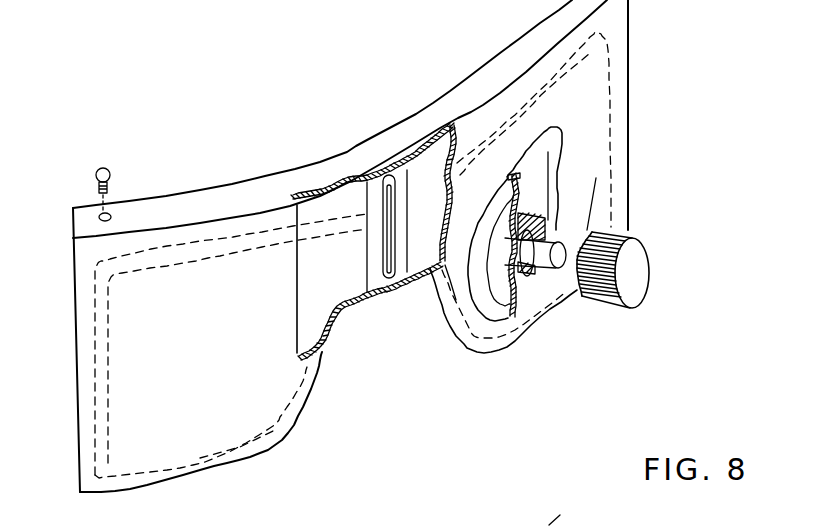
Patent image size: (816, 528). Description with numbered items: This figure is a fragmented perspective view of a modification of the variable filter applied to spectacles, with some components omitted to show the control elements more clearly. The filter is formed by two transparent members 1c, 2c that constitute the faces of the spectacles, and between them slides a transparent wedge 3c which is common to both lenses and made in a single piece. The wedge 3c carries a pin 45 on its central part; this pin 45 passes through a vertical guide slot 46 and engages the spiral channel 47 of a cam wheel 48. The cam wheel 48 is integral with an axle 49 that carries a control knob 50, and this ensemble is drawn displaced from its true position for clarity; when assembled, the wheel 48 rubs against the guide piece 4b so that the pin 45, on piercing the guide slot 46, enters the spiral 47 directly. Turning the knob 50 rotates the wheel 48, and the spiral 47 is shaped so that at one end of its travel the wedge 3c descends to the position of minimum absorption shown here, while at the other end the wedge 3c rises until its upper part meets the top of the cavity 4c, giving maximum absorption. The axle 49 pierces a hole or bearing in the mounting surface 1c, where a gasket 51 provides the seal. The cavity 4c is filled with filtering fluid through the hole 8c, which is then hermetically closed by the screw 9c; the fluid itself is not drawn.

The transparent member 1c is at (588, 132).
The transparent member 2c is at (487, 80).
The sliding transparent wedge 3c is at (313, 300).
The cavity 4c is at (440, 148).
The guide piece 4b is at (373, 278).
The hole 8c is at (103, 213).
The screw 9c is at (100, 170).
The pin 45 is at (388, 214).
The vertical guide slot 46 is at (387, 243).
The spiral channel 47 is at (480, 290).
The cam wheel 48 is at (500, 300).
The axle 49 is at (565, 234).
The control knob 50 is at (638, 289).
The gasket 51 is at (507, 320).